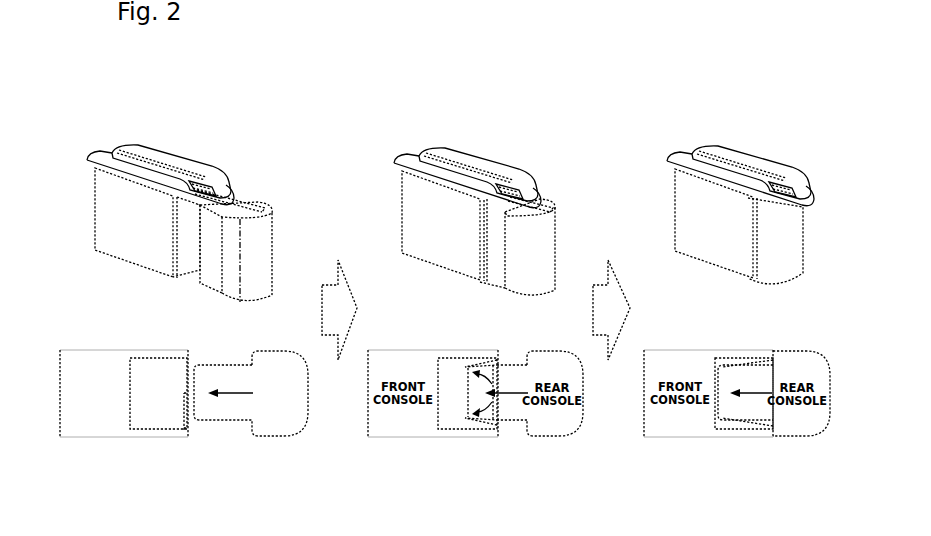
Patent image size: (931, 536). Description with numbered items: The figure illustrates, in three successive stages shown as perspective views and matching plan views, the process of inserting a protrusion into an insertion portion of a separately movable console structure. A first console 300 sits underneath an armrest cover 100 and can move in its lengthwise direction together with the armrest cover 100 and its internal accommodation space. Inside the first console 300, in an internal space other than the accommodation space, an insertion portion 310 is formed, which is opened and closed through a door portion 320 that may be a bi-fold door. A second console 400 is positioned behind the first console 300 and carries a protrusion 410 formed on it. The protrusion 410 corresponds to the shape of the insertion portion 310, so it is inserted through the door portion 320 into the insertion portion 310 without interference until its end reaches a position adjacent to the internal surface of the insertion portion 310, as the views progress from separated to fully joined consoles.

The armrest cover 100 is at (157, 153).
The first console 300 is at (92, 205).
The insertion portion 310 is at (142, 428).
The door portion 320 is at (185, 431).
The second console 400 is at (267, 197).
The protrusion 410 is at (236, 212).